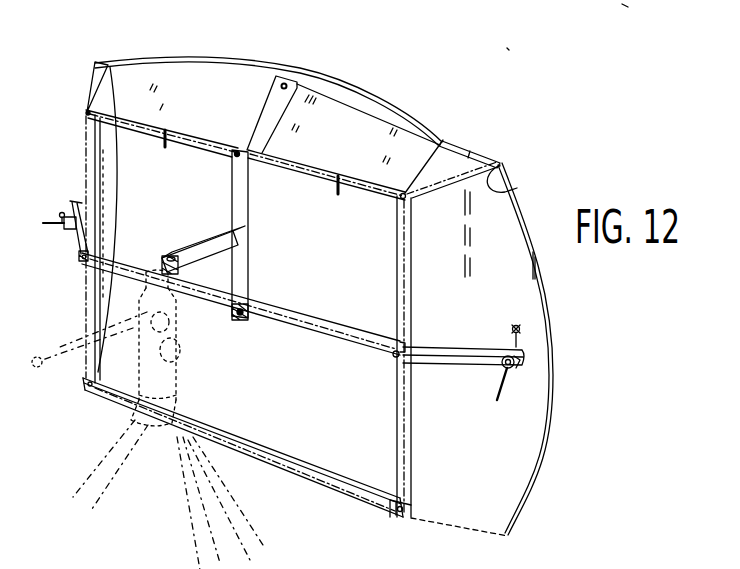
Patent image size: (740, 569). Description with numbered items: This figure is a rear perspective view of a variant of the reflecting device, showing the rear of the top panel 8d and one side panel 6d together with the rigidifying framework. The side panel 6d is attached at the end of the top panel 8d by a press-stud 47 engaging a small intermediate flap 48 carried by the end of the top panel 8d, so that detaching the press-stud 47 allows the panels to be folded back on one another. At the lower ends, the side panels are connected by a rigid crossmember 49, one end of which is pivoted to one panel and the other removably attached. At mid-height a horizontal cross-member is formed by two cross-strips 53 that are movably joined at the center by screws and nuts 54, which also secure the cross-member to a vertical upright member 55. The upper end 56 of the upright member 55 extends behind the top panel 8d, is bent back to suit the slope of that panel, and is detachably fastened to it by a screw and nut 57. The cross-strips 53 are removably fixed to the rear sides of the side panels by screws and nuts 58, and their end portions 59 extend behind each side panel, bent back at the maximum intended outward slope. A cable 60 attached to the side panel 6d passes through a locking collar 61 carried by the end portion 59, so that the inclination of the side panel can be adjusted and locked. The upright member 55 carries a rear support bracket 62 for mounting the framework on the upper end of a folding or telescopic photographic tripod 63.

The top panel 8d is at (390, 127).
The side panel 6d is at (517, 441).
The press-stud 47 is at (517, 188).
The small intermediate flap 48 is at (108, 68).
The rigid crossmember 49 is at (310, 480).
The cross-strip 53 is at (128, 262).
The screws and nuts 54 is at (240, 320).
The vertical upright member 55 is at (243, 212).
The upper end 56 is at (258, 108).
The screw and nut 57 is at (234, 153).
The screws and nuts 58 is at (80, 258).
The end portion 59 is at (74, 204).
The cable 60 is at (522, 344).
The locking collar 61 is at (62, 228).
The rear support bracket 62 is at (216, 238).
The tripod 63 is at (138, 377).